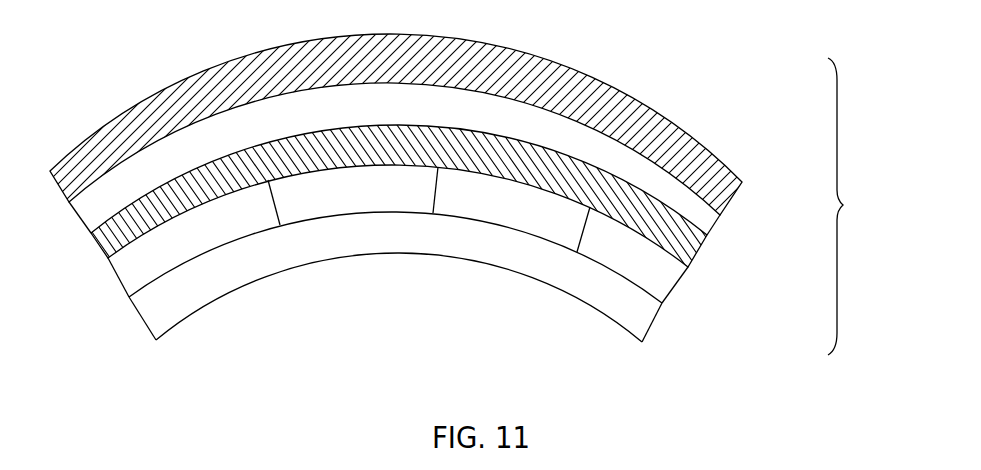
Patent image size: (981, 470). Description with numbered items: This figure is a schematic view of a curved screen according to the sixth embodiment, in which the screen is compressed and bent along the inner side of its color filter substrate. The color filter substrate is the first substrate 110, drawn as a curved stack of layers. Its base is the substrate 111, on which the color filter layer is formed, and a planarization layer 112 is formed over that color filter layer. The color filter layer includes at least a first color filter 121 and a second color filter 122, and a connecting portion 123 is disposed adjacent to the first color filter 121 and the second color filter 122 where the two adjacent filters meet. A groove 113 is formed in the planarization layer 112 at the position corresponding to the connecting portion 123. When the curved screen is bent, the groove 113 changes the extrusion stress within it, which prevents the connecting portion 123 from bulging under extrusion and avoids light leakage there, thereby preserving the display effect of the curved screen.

The first substrate 110 is at (863, 206).
The substrate 111 is at (650, 116).
The planarization layer 112 is at (640, 323).
The groove 113 is at (562, 285).
The first color filter 121 is at (658, 275).
The second color filter 122 is at (547, 213).
The connecting portion 123 is at (582, 235).